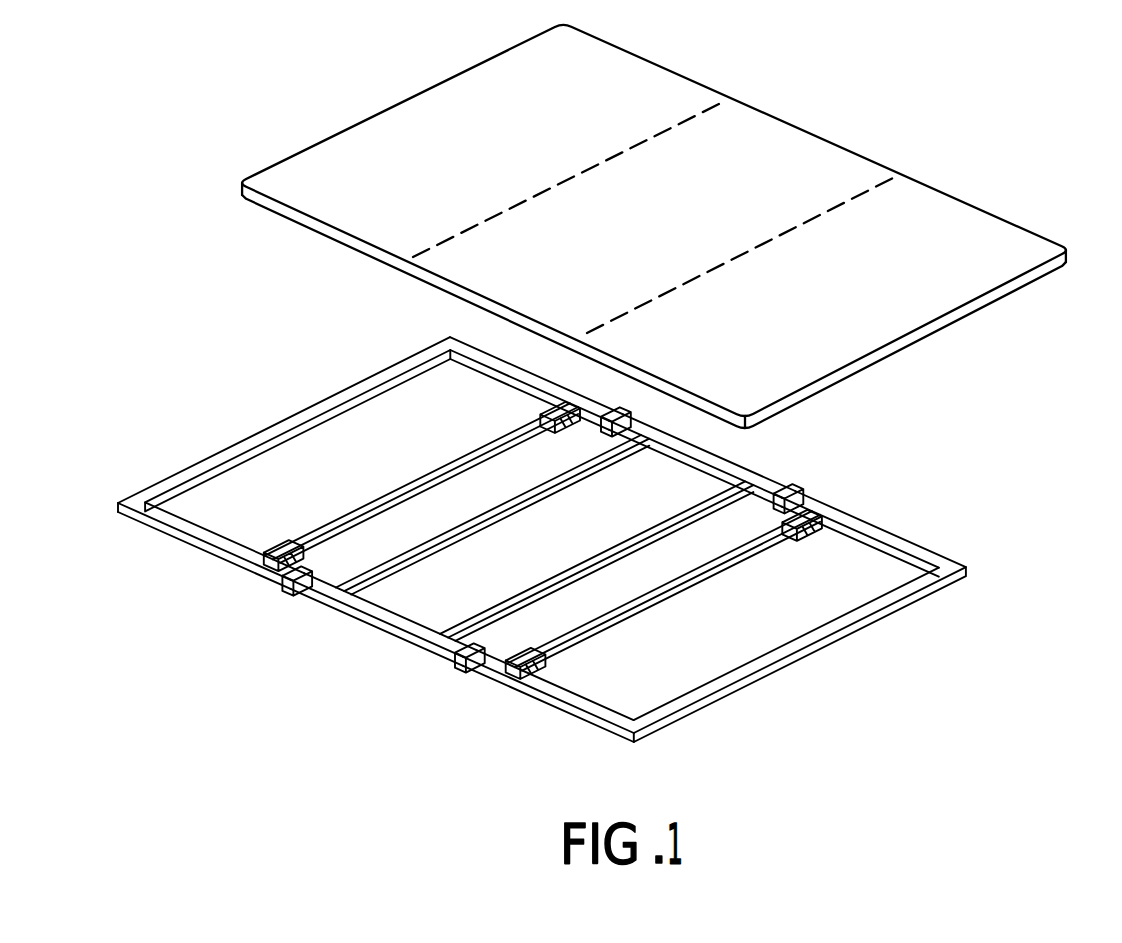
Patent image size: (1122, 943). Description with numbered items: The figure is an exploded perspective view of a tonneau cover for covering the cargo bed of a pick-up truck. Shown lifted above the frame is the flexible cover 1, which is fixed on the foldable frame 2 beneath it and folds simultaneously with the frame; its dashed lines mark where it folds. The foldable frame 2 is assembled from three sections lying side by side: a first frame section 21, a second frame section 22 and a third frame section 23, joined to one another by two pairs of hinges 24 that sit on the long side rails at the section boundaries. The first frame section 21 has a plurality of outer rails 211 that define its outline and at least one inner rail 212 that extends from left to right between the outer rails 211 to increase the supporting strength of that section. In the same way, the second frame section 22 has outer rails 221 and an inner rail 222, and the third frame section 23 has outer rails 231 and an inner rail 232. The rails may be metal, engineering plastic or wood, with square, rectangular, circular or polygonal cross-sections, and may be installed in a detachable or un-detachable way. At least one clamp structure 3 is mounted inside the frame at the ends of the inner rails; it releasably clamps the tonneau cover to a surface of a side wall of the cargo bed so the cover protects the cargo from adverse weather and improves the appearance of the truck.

The flexible cover 1 is at (937, 203).
The foldable frame 2 is at (607, 540).
The first frame section 21 is at (370, 472).
The second frame section 22 is at (610, 563).
The third frame section 23 is at (769, 634).
The outer rails 211 is at (503, 363).
The inner rail 212 is at (503, 437).
The outer rails 221 is at (735, 457).
The inner rail 222 is at (680, 508).
The outer rails 231 is at (907, 547).
The inner rail 232 is at (697, 582).
The hinges 24 is at (290, 585).
The clamp structure 3 is at (829, 556).